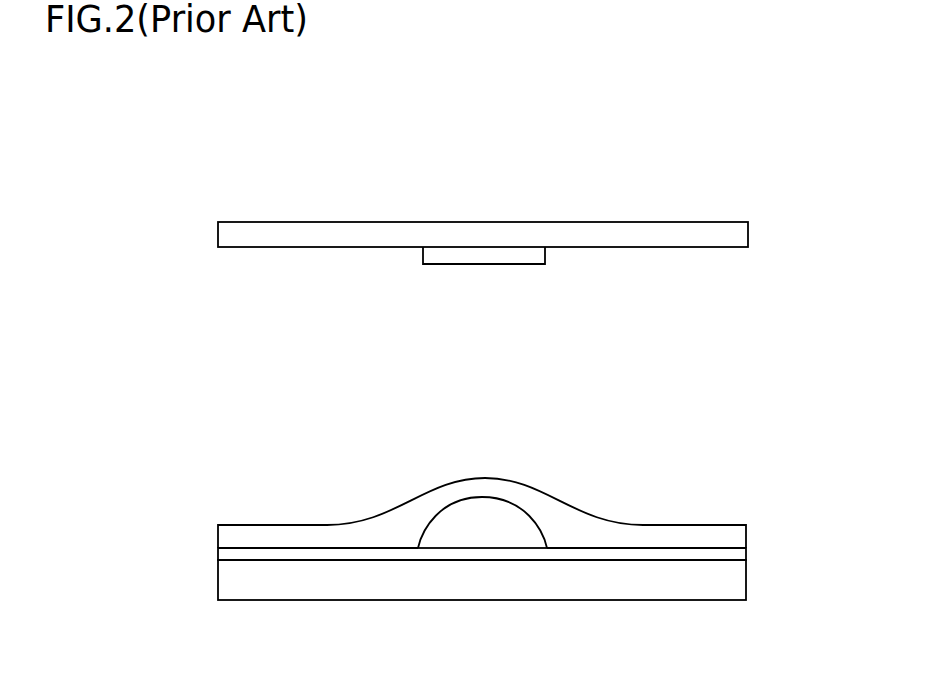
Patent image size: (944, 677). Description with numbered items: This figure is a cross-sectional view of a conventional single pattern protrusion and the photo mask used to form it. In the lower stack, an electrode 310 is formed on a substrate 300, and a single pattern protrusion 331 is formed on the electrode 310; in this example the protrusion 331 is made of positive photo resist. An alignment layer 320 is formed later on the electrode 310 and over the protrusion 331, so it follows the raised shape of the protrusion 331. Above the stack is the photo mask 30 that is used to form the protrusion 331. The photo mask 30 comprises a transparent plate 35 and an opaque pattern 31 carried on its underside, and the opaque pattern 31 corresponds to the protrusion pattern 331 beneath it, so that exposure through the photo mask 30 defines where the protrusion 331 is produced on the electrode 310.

The photo mask 30 is at (631, 206).
The transparent plate 35 is at (748, 232).
The opaque pattern 31 is at (485, 260).
The substrate 300 is at (746, 590).
The electrode 310 is at (746, 556).
The alignment layer 320 is at (746, 537).
The protrusion 331 is at (483, 505).